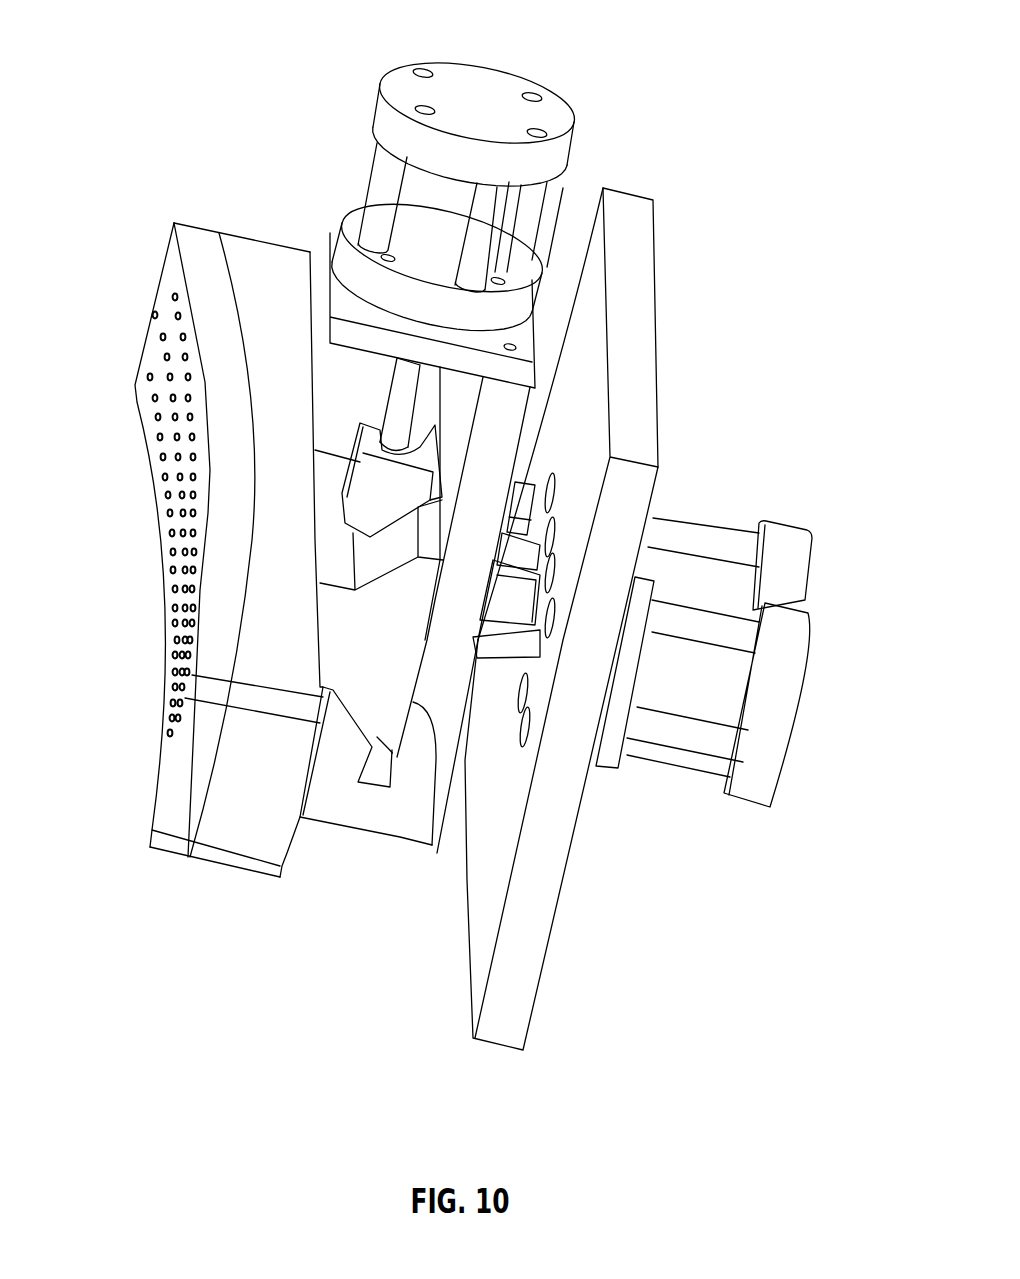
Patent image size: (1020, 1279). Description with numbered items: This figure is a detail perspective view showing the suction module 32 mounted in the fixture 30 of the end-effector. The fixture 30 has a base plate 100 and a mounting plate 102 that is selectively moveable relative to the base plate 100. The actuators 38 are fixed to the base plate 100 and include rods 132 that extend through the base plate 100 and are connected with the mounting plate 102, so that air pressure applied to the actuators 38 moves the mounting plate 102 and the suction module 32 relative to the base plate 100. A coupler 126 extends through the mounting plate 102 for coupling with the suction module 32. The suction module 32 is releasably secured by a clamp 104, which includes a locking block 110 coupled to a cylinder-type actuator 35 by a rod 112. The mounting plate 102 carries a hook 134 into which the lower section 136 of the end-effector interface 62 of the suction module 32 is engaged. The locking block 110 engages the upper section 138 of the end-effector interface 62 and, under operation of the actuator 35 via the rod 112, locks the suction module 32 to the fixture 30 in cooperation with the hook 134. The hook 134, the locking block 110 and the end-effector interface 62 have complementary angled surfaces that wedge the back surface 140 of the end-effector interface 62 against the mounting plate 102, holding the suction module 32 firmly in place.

The fixture 30 is at (645, 111).
The suction module 32 is at (203, 858).
The actuator 35 is at (487, 100).
The actuators 38 is at (812, 627).
The end-effector interface 62 is at (383, 657).
The base plate 100 is at (637, 337).
The mounting plate 102 is at (497, 460).
The clamp 104 is at (431, 195).
The locking block 110 is at (380, 500).
The rod 112 is at (408, 377).
The coupler 126 is at (528, 608).
The rods 132 is at (528, 552).
The hook 134 is at (340, 752).
The lower section 136 is at (397, 757).
The upper section 138 is at (423, 570).
The back surface 140 is at (433, 845).